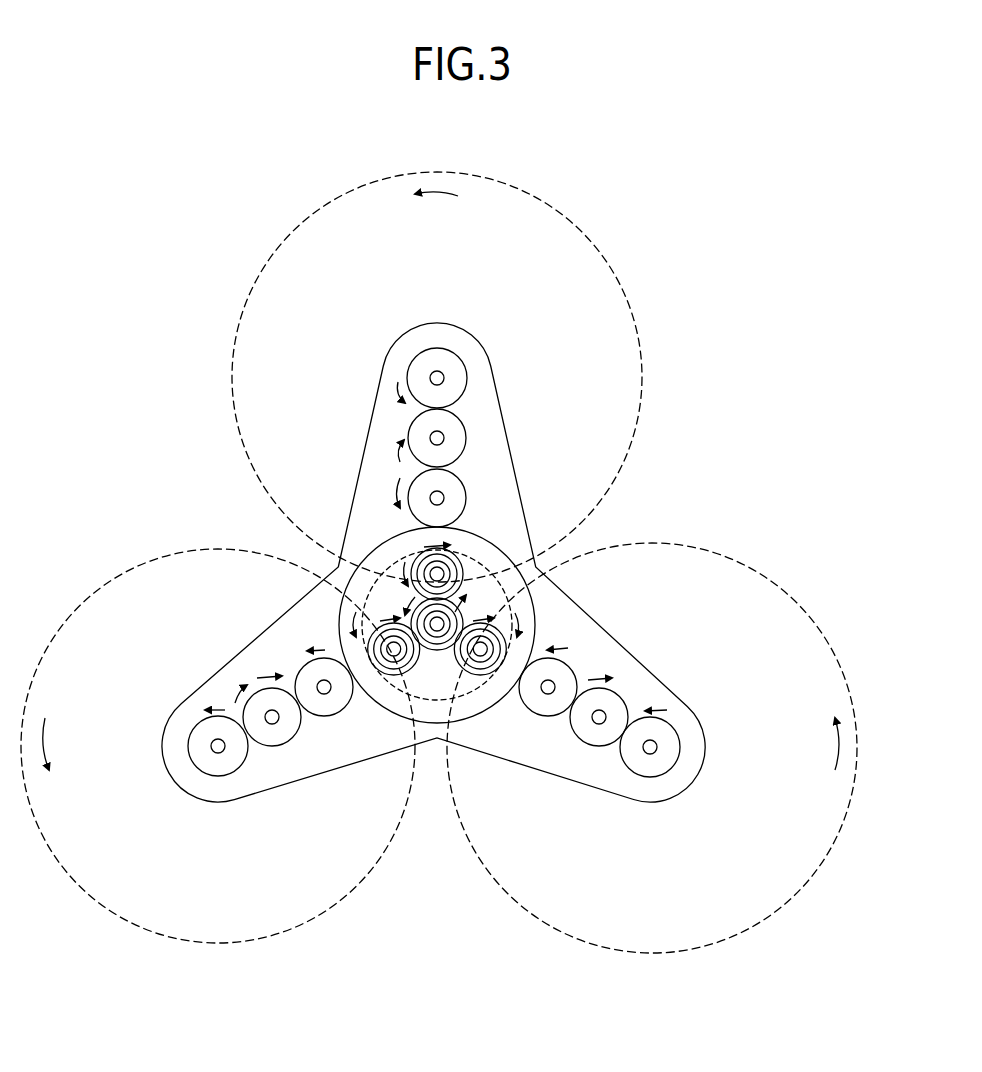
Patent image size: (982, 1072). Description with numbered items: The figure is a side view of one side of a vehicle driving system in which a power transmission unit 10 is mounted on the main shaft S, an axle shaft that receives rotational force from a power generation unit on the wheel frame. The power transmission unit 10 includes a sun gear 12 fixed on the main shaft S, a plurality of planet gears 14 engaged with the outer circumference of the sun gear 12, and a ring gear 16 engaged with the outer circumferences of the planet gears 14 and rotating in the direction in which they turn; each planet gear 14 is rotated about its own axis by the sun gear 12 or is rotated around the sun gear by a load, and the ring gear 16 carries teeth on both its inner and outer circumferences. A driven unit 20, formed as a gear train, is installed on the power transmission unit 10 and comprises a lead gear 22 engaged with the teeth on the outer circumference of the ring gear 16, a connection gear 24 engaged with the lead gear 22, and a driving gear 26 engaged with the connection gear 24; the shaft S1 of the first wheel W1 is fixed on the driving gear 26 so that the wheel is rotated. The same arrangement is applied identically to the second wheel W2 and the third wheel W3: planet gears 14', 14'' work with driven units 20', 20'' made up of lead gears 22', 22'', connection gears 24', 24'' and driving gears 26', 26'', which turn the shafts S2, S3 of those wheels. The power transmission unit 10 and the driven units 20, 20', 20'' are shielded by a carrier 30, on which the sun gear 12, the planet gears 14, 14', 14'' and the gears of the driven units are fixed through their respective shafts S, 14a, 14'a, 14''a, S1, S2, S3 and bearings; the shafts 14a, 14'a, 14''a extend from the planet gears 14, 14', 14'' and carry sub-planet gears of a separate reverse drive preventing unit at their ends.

The power transmission unit 10 is at (343, 577).
The sun gear 12 is at (502, 581).
The planet gear 14 is at (350, 606).
The planet gear 14' is at (493, 573).
The planet gear 14'' is at (515, 603).
The shaft 14a is at (394, 650).
The shaft 14'a is at (496, 534).
The shaft 14''a is at (566, 625).
The ring gear 16 is at (490, 708).
The driven unit 20 is at (233, 721).
The driven unit 20' is at (442, 399).
The driven unit 20'' is at (645, 741).
The lead gear 22 is at (327, 735).
The lead gear 22' is at (486, 477).
The lead gear 22'' is at (590, 660).
The connection gear 24 is at (272, 757).
The connection gear 24' is at (486, 424).
The connection gear 24'' is at (645, 699).
The driving gear 26 is at (218, 779).
The driving gear 26' is at (496, 363).
The driving gear 26'' is at (695, 760).
The carrier 30 is at (313, 780).
The main shaft S is at (437, 630).
The shaft S1 is at (216, 745).
The shaft S2 is at (437, 378).
The shaft S3 is at (652, 748).
The first wheel W1 is at (196, 910).
The second wheel W2 is at (345, 232).
The third wheel W3 is at (700, 915).